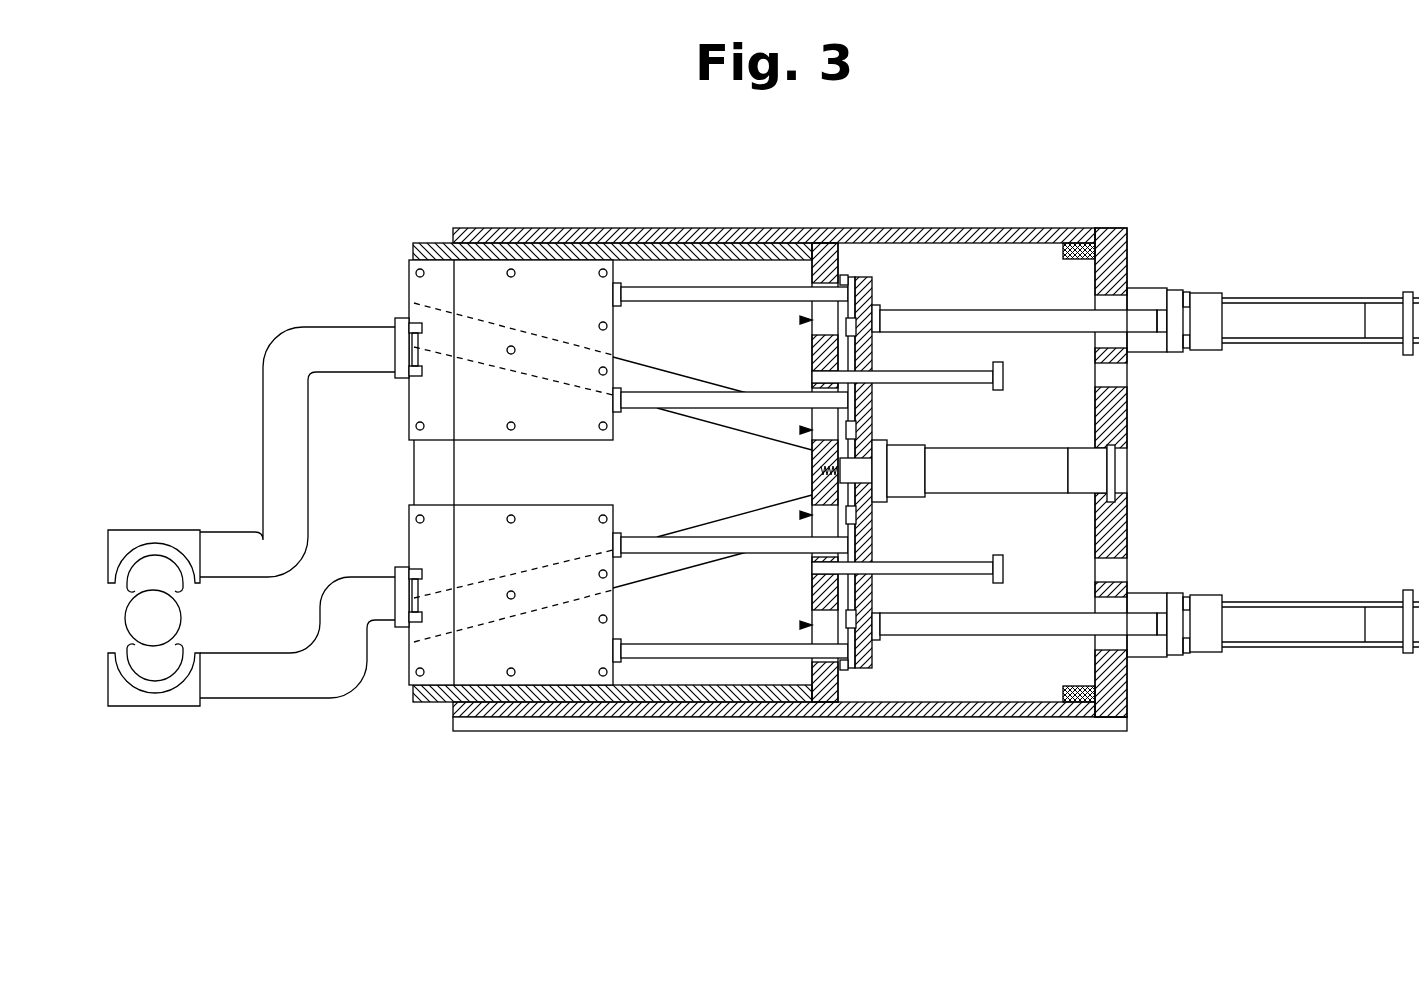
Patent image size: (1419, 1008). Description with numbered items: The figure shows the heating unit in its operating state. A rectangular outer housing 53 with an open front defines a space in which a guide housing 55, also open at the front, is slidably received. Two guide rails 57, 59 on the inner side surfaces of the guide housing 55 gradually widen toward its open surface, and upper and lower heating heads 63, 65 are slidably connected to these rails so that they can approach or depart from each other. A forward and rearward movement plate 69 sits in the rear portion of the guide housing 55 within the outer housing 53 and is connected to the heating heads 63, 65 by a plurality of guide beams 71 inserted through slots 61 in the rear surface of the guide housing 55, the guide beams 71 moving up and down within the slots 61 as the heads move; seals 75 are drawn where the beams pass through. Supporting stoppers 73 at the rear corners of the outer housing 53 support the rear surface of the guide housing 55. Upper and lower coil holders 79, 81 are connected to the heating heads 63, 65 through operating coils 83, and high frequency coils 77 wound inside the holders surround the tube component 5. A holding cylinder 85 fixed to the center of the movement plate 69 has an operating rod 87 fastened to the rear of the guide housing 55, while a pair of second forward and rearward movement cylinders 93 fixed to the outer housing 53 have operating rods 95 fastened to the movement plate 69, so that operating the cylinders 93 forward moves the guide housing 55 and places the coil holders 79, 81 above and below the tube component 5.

The tube component 5 is at (125, 615).
The outer housing 53 is at (688, 248).
The guide housing 55 is at (760, 250).
The guide rail 57 is at (667, 378).
The guide rail 59 is at (663, 578).
The slots 61 is at (802, 320).
The upper heating head 63 is at (563, 268).
The lower heating head 65 is at (566, 672).
The forward and rearward movement plate 69 is at (872, 300).
The guide beams 71 is at (636, 302).
The supporting stoppers 73 is at (1079, 245).
The seals 75 is at (853, 327).
The high frequency coils 77 is at (124, 592).
The upper coil holder 79 is at (128, 532).
The lower coil holder 81 is at (128, 704).
The operating coils 83 is at (228, 534).
The holding cylinder 85 is at (1020, 456).
The operating rod 87 is at (880, 470).
The second forward and rearward movement cylinders 93 is at (1348, 302).
The operating rod 95 is at (1004, 315).